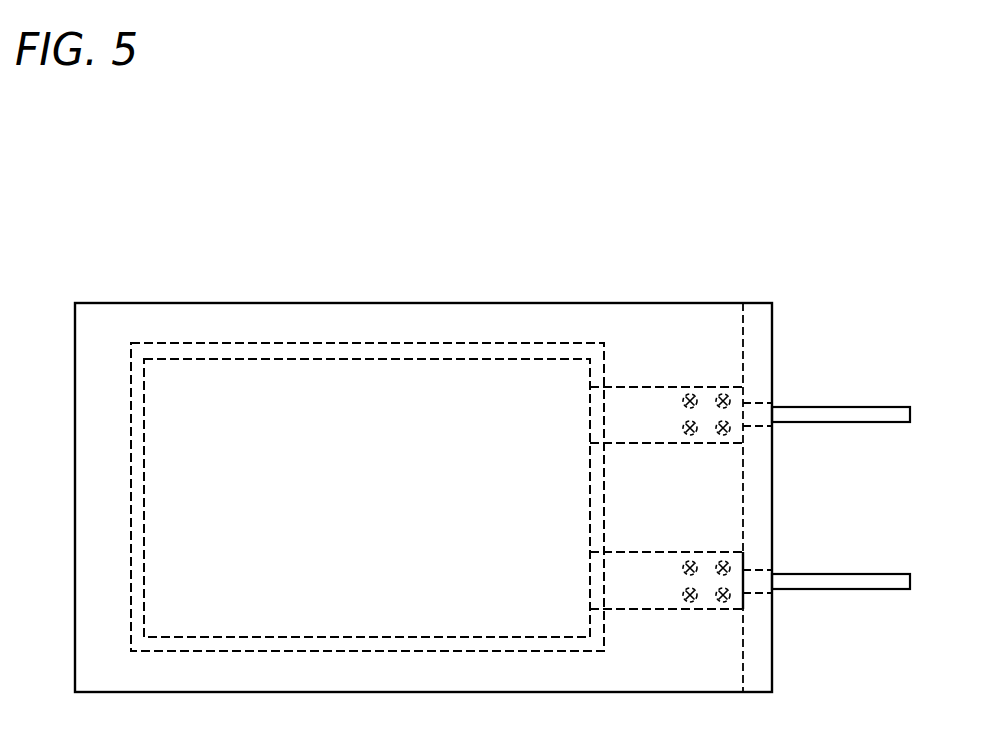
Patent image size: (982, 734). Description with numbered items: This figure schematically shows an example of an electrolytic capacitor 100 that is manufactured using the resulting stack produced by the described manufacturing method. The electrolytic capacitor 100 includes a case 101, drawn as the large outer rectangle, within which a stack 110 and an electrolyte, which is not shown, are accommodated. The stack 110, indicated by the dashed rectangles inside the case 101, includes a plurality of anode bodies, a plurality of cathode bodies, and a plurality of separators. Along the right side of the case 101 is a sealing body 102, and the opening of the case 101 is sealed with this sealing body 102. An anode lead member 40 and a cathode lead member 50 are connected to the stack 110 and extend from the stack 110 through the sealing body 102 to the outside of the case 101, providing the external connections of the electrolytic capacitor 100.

The electrolytic capacitor 100 is at (149, 260).
The case 101 is at (548, 303).
The sealing body 102 is at (757, 303).
The stack 110 is at (358, 380).
The anode lead member 40 is at (883, 415).
The cathode lead member 50 is at (883, 580).